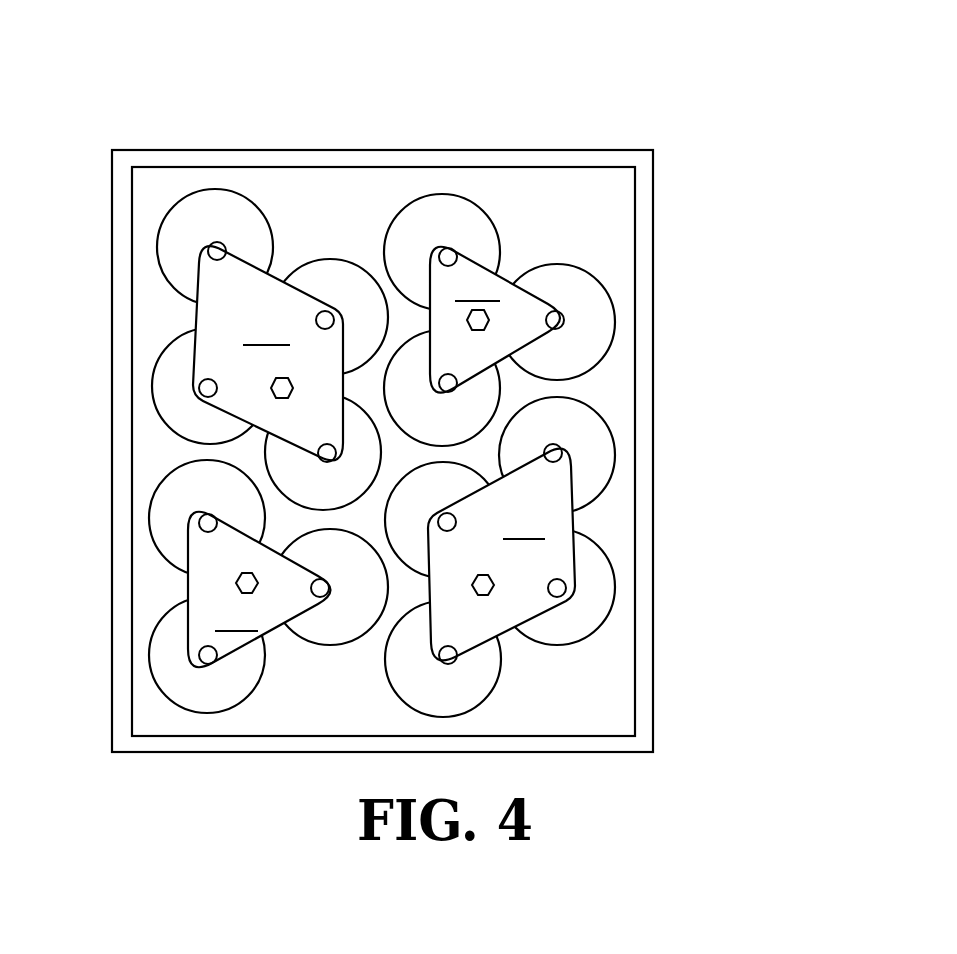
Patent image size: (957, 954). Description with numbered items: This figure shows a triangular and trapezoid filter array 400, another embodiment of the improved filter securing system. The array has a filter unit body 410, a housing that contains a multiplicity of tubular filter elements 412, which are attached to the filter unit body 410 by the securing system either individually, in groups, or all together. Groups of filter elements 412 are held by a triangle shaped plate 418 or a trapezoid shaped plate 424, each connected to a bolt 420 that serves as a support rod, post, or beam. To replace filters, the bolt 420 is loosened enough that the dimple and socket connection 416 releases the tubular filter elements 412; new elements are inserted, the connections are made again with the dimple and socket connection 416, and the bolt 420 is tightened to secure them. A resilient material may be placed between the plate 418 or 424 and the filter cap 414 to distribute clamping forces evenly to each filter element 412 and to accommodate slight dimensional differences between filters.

The triangular and trapezoid filter array 400 is at (527, 59).
The filter unit body 410 is at (277, 150).
The tubular filter elements 412 is at (480, 453).
The filter cap 414 is at (610, 435).
The dimple and socket connection 416 is at (555, 319).
The triangle shaped plate 418 is at (374, 457).
The bolt 420 is at (273, 400).
The trapezoid shaped plate 424 is at (384, 453).